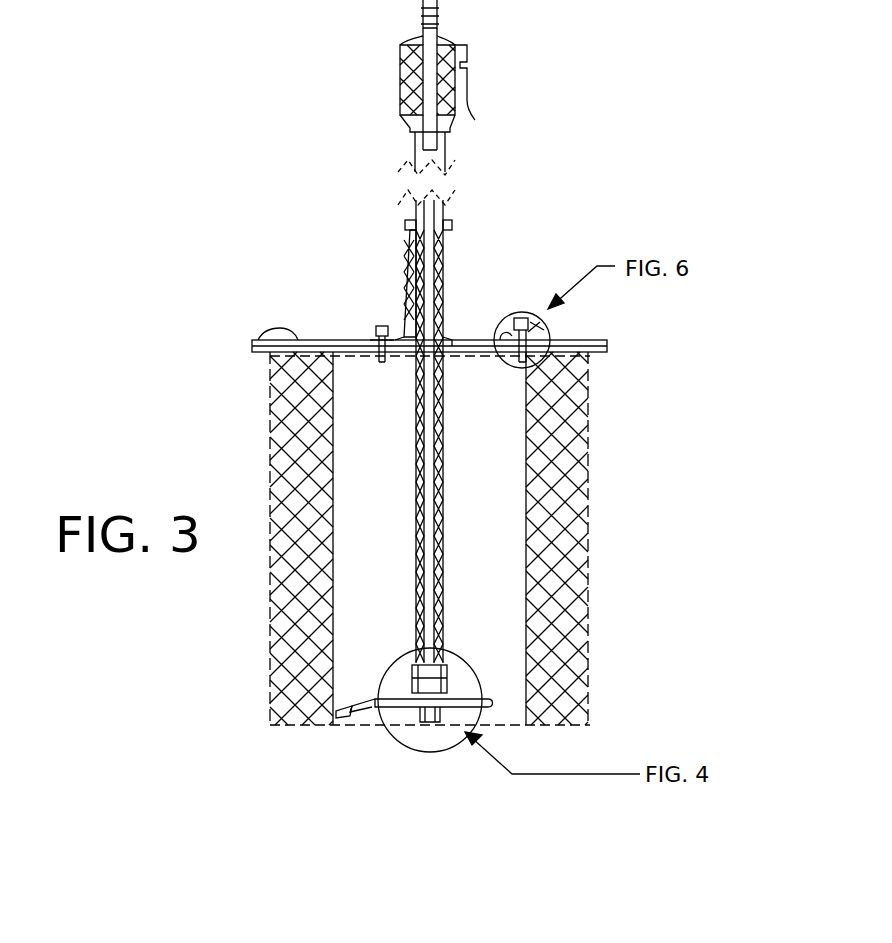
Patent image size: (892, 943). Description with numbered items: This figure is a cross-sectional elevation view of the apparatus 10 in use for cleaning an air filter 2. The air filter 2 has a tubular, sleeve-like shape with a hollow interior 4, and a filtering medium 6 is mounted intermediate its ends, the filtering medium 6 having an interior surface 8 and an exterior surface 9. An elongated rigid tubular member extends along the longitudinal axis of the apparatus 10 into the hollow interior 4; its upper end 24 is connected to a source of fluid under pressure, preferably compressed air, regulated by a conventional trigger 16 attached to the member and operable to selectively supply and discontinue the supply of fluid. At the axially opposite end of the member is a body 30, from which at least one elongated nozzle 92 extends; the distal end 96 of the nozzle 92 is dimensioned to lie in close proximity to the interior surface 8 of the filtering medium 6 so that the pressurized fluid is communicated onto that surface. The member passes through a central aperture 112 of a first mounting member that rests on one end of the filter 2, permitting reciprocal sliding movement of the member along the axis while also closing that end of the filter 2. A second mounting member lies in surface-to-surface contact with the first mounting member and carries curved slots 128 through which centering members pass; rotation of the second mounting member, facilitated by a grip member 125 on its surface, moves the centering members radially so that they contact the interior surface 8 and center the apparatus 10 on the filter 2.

The air filter 2 is at (588, 487).
The hollow interior 4 is at (495, 483).
The filtering medium 6 is at (578, 566).
The interior surface 8 is at (527, 606).
The exterior surface 9 is at (590, 647).
The apparatus 10 is at (608, 118).
The trigger 16 is at (470, 55).
The end 24 is at (440, 158).
The body 30 is at (407, 752).
The elongated nozzle 92 is at (370, 700).
The distal end 96 is at (345, 713).
The central aperture 112 is at (452, 336).
The grip member 125 is at (283, 332).
The curved slots 128 is at (329, 5).